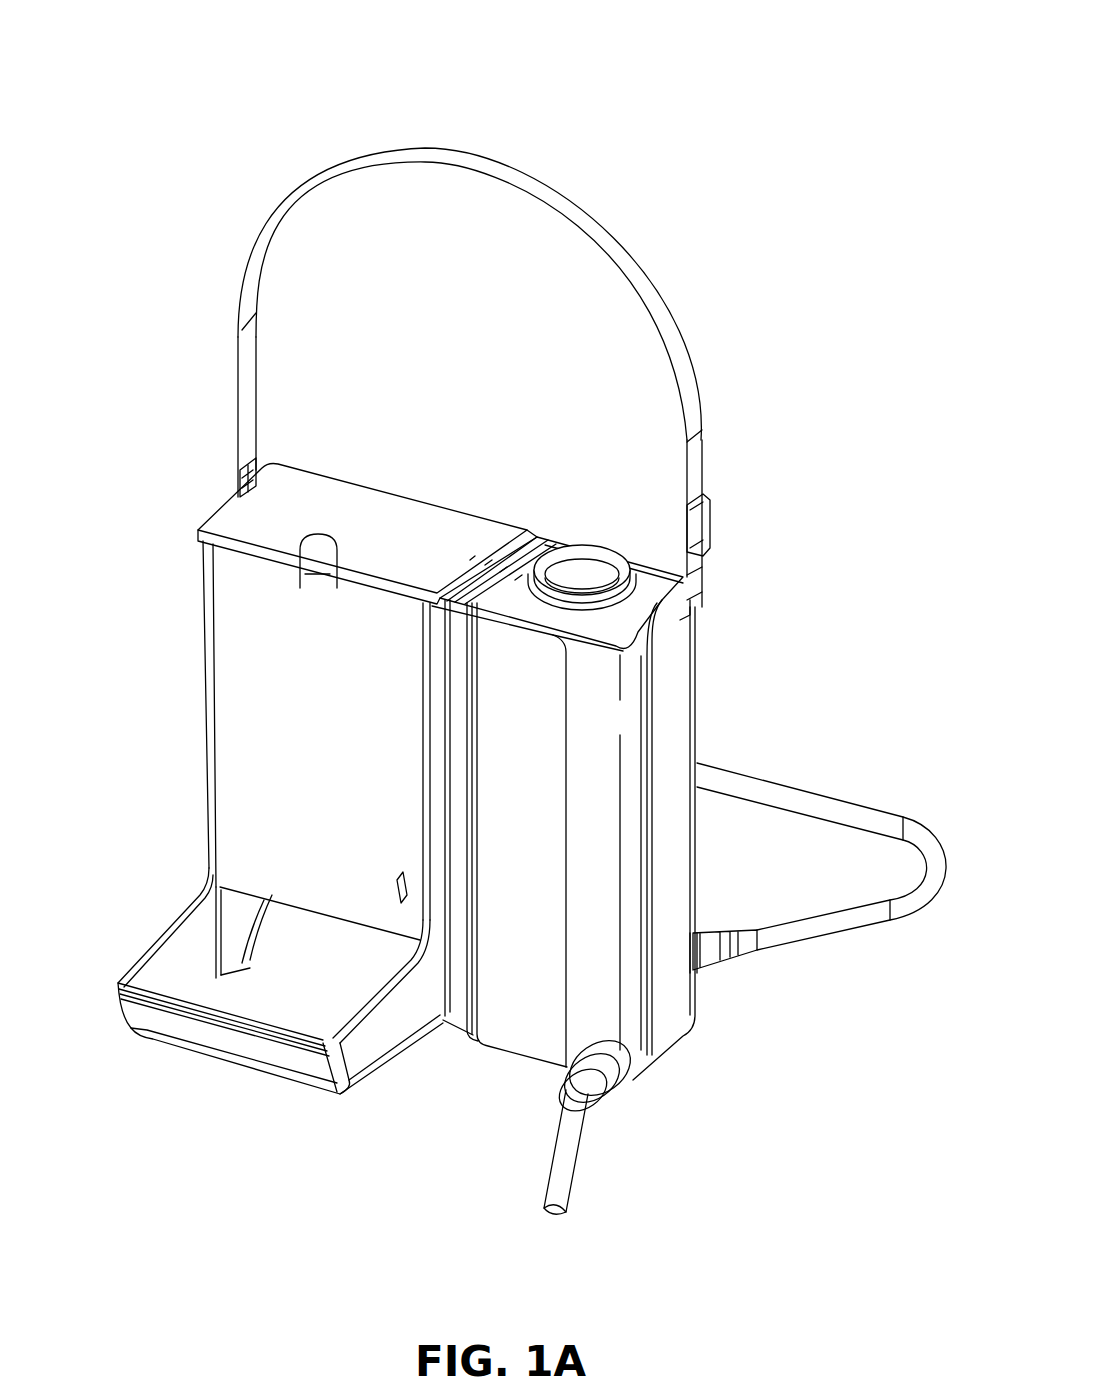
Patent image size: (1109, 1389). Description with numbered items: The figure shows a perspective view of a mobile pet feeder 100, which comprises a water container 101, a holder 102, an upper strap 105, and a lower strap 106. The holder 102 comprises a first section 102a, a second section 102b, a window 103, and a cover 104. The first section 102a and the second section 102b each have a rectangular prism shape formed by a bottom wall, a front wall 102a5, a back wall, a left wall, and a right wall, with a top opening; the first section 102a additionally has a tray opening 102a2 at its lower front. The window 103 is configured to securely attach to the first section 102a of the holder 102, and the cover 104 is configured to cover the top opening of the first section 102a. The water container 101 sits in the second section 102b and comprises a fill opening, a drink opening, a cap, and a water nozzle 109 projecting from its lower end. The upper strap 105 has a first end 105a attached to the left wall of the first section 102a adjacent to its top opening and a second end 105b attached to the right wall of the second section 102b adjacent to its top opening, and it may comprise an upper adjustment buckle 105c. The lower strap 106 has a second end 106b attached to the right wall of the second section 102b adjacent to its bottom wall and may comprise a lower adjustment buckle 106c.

The mobile pet feeder 100 is at (628, 60).
The water container 101 is at (625, 729).
The holder 102 is at (490, 412).
The first section 102a is at (330, 932).
The tray opening 102a2 is at (152, 912).
The front wall 102a5 is at (358, 735).
The second section 102b is at (545, 849).
The window 103 is at (340, 766).
The cover 104 is at (388, 535).
The upper strap 105 is at (640, 205).
The first end 105a is at (215, 465).
The second end 105b is at (722, 568).
The upper adjustment buckle 105c is at (722, 512).
The lower strap 106 is at (822, 756).
The second end 106b is at (703, 995).
The lower adjustment buckle 106c is at (752, 975).
The water nozzle 109 is at (630, 1150).